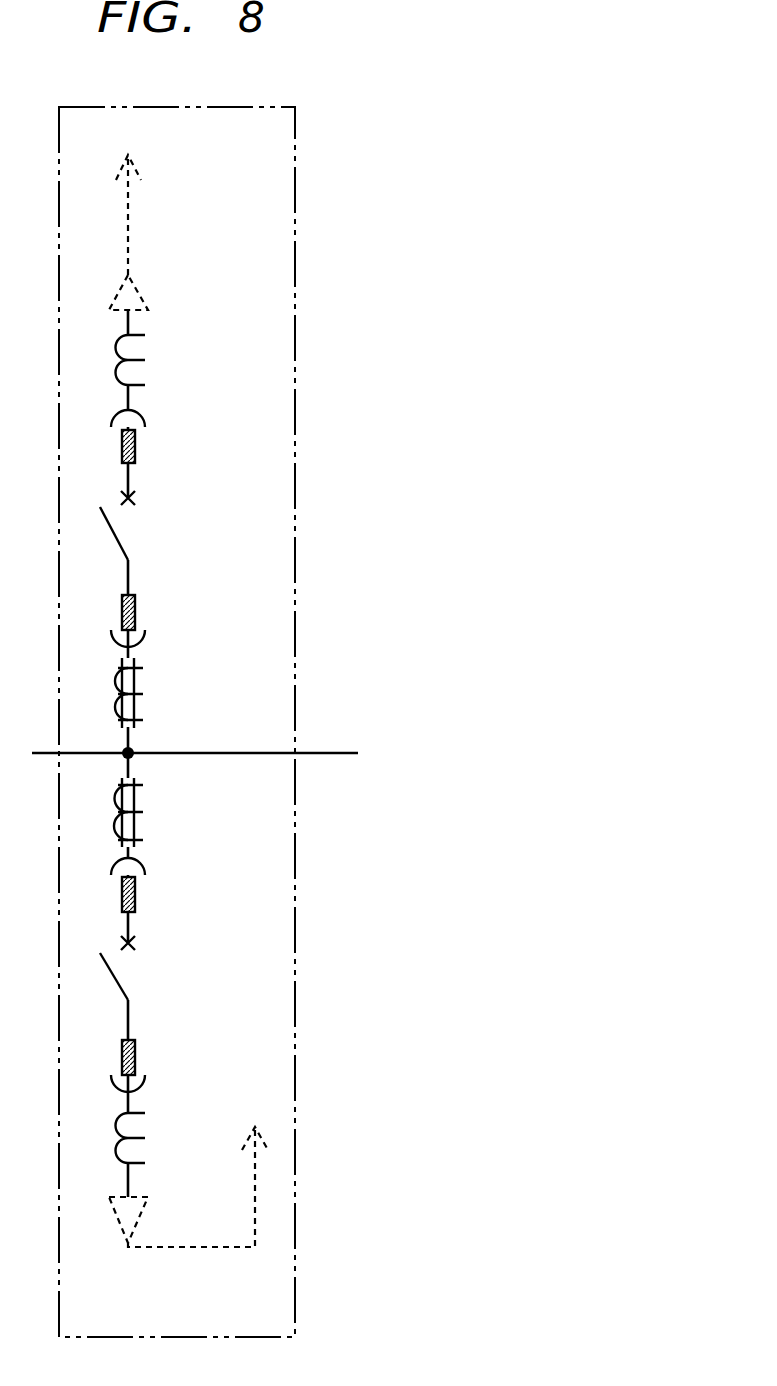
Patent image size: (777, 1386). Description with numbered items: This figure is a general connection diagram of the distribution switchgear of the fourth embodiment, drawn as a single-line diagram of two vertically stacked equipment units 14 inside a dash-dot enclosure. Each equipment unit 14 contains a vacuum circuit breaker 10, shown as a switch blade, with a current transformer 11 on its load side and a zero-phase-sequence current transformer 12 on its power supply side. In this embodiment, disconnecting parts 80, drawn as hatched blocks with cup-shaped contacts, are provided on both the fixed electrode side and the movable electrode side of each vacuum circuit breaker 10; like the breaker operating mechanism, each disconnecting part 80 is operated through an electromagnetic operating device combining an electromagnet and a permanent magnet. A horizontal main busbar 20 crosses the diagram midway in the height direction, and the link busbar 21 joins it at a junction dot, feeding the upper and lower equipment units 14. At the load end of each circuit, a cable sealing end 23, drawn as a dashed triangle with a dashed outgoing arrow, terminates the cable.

The vacuum circuit breaker 10 is at (131, 531).
The current transformer 11 is at (147, 376).
The zero-phase-sequence current transformer 12 is at (147, 678).
The equipment unit 14 is at (283, 148).
The main busbar 20 is at (328, 752).
The link busbar 21 is at (134, 749).
The cable sealing end 23 is at (133, 283).
The disconnecting part 80 is at (136, 447).